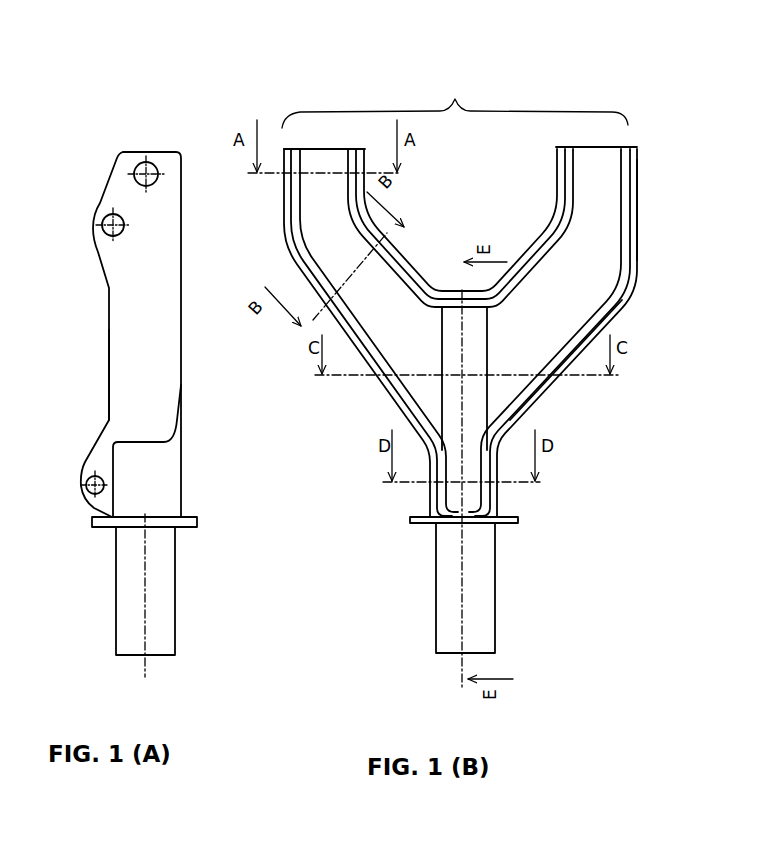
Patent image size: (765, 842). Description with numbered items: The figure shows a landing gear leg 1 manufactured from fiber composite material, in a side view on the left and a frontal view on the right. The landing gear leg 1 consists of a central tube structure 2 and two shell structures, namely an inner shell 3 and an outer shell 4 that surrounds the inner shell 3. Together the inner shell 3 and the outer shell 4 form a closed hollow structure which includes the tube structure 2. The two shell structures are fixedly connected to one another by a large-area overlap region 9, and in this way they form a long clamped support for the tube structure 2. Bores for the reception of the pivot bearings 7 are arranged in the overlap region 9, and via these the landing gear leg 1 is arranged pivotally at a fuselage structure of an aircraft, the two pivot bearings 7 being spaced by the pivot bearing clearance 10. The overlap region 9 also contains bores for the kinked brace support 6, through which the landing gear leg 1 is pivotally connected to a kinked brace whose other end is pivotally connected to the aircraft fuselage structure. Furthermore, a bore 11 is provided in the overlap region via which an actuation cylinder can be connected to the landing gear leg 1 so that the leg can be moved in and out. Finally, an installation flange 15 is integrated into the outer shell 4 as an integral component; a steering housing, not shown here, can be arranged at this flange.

In FIG. 1A, the landing gear leg 1 is at (150, 362).
In FIG. 1B, the landing gear leg 1 is at (576, 294).
In FIG. 1A, the central tube structure 2 is at (132, 596).
In FIG. 1B, the central tube structure 2 is at (477, 593).
In FIG. 1B, the inner shell 3 is at (598, 175).
In FIG. 1A, the outer shell 4 is at (140, 422).
In FIG. 1B, the outer shell 4 is at (533, 405).
In FIG. 1A, the kinked brace support 6 is at (86, 484).
In FIG. 1A, the pivot bearings 7 is at (132, 178).
In FIG. 1B, the overlap region 9 is at (633, 218).
In FIG. 1B, the pivot bearing clearance 10 is at (455, 100).
In FIG. 1A, the bore 11 is at (100, 228).
In FIG. 1A, the installation flange 15 is at (92, 521).
In FIG. 1B, the installation flange 15 is at (520, 518).